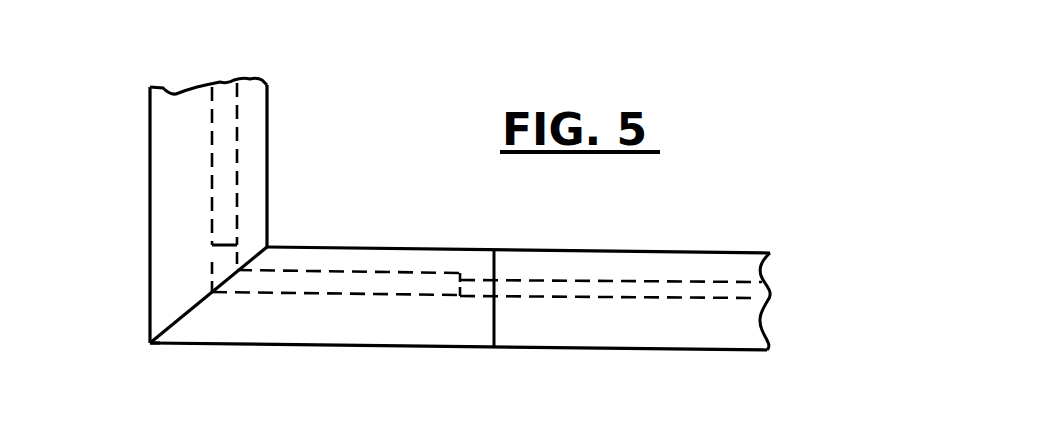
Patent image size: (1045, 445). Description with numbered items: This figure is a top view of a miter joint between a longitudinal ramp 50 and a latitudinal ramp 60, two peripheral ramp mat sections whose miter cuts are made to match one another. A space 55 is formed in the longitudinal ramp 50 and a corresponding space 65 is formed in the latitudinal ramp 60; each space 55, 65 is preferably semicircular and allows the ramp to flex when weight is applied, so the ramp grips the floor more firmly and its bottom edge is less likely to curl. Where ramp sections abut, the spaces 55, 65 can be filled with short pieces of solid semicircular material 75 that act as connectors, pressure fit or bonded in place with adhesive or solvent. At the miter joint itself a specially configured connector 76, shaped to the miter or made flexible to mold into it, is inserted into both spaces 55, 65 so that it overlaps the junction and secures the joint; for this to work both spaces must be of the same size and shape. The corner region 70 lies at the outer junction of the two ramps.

The longitudinal ramp 50 is at (161, 191).
The space 55 is at (225, 160).
The latitudinal ramp 60 is at (290, 330).
The space 65 is at (576, 281).
The corner 70 is at (150, 327).
The solid semicircular connector 75 is at (511, 287).
The miter connector 76 is at (216, 266).